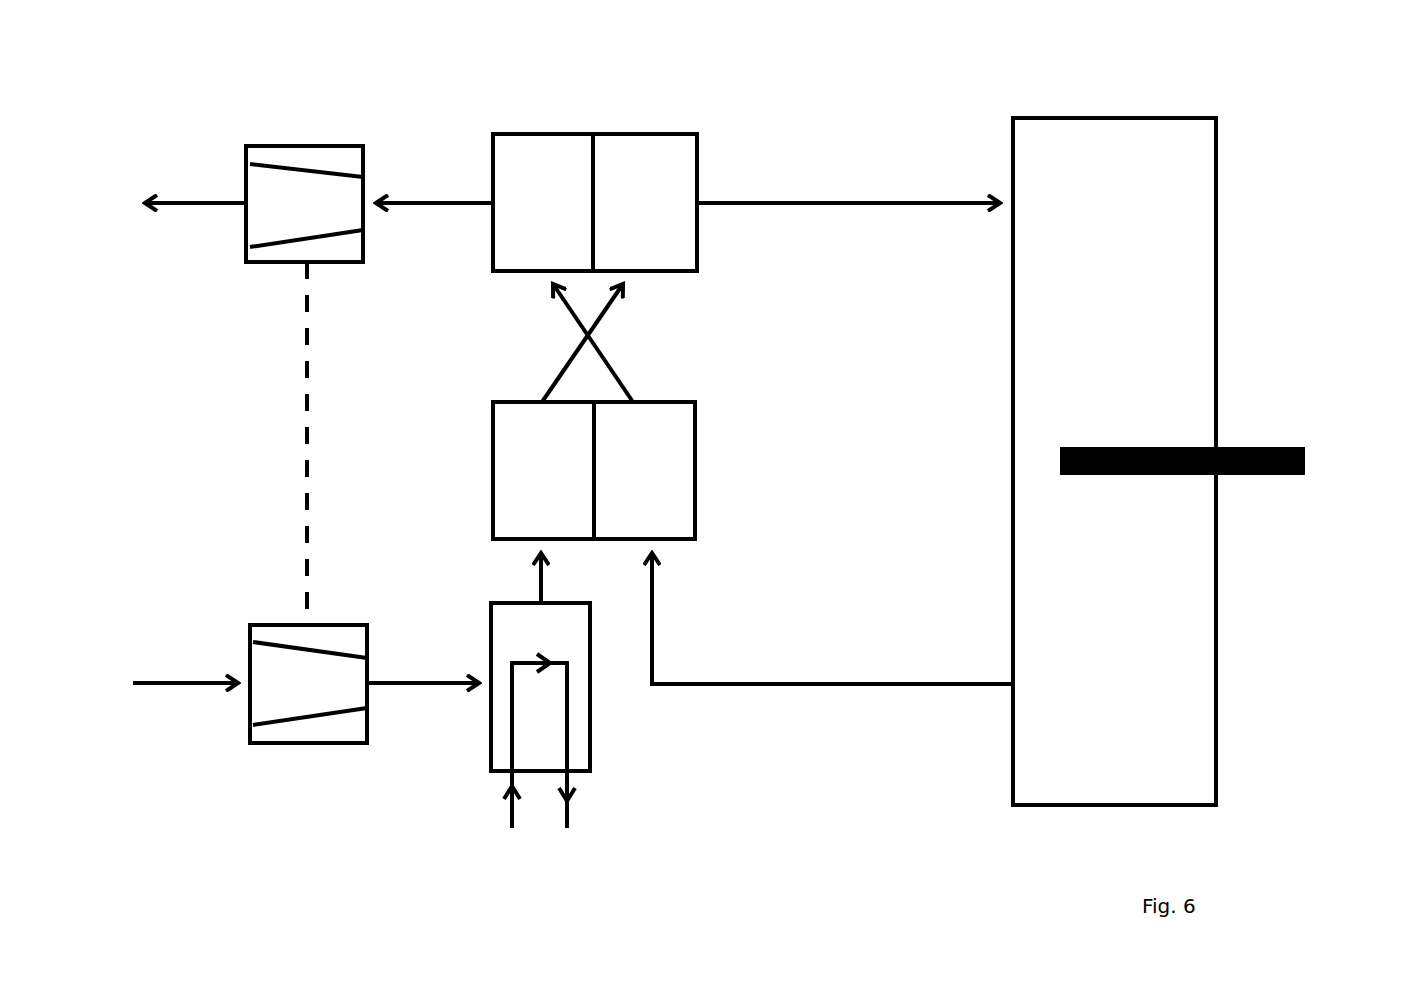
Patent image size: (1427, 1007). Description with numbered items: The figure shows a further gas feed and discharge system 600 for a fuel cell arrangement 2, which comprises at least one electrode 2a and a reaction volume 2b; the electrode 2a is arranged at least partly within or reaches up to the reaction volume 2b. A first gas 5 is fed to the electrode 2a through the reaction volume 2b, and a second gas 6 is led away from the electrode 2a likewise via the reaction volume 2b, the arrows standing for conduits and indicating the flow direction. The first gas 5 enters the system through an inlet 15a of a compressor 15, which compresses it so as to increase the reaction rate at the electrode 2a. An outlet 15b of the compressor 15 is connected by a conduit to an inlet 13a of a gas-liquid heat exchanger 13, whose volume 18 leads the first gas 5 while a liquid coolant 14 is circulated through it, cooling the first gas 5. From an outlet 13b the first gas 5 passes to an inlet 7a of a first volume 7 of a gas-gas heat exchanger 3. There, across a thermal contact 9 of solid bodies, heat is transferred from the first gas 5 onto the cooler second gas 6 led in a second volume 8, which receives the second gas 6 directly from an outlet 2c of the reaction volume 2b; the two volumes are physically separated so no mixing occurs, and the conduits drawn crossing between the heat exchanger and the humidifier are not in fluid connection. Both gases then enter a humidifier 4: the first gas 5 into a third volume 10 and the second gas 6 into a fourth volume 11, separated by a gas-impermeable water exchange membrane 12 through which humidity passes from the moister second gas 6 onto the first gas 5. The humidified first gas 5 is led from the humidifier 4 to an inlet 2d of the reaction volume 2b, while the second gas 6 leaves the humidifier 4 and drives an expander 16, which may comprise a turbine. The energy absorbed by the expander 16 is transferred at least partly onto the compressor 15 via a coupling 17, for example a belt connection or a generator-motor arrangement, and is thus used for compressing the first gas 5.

The gas feed and discharge system 600 is at (1298, 178).
The fuel cell arrangement 2 is at (1219, 697).
The electrode 2a is at (1247, 447).
The reaction volume 2b is at (1115, 640).
The outlet of the fuel cell arrangement 2c is at (1016, 688).
The inlet of the fuel cell arrangement 2d is at (1016, 201).
The gas-gas heat exchanger 3 is at (472, 500).
The humidifier 4 is at (664, 107).
The first gas 5 is at (860, 197).
The second gas 6 is at (188, 197).
The first volume 7 is at (543, 470).
The inlet of the first volume 7a is at (530, 545).
The second volume 8 is at (644, 470).
The thermal contact 9 is at (596, 505).
The third volume 10 is at (645, 202).
The fourth volume 11 is at (543, 202).
The water exchange membrane 12 is at (592, 152).
The gas-liquid heat exchanger 13 is at (592, 749).
The inlet of the gas-liquid heat exchanger 13a is at (488, 694).
The outlet of the gas-liquid heat exchanger 13b is at (541, 590).
The coolant 14 is at (508, 812).
The compressor 15 is at (306, 746).
The inlet of the compressor 15a is at (248, 680).
The outlet of the compressor 15b is at (370, 680).
The expander 16 is at (306, 146).
The coupling 17 is at (310, 415).
The volume 18 is at (537, 723).